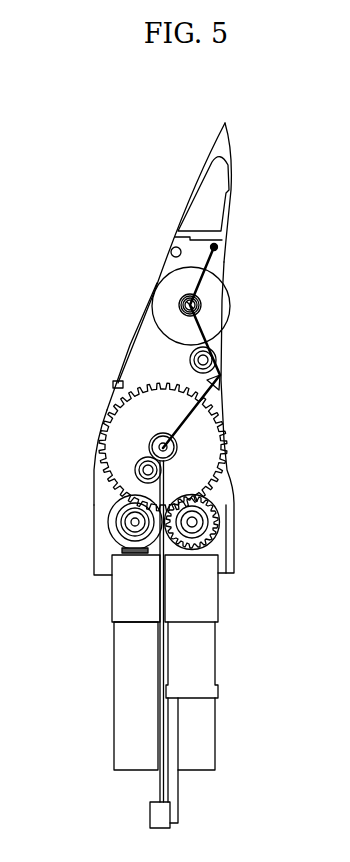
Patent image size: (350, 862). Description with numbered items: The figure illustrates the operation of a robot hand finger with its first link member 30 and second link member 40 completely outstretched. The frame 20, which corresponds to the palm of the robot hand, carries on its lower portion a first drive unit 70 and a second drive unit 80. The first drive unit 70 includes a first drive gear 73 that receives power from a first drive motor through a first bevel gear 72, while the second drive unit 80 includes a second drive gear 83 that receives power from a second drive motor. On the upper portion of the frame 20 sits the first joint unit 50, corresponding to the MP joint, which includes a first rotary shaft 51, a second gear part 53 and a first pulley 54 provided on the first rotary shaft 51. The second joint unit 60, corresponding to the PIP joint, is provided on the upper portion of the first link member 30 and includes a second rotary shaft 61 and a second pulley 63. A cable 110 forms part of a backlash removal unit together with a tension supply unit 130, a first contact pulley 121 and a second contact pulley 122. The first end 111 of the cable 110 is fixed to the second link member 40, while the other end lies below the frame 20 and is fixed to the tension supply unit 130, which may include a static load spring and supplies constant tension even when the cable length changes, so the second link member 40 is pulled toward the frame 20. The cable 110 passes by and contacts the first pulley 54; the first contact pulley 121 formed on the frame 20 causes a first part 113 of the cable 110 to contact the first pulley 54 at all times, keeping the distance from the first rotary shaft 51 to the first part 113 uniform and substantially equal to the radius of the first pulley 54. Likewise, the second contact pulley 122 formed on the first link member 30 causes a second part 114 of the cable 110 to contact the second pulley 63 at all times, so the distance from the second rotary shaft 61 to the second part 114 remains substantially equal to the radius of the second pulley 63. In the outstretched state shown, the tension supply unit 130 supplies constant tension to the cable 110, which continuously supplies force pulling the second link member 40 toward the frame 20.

The frame 20 is at (235, 545).
The first link member 30 is at (113, 385).
The second link member 40 is at (175, 237).
The first joint unit 50 is at (185, 442).
The first rotary shaft 51 is at (181, 466).
The second gear part 53 is at (140, 476).
The first pulley 54 is at (177, 434).
The second joint unit 60 is at (207, 302).
The second rotary shaft 61 is at (200, 312).
The second pulley 63 is at (188, 290).
The first drive unit 70 is at (108, 658).
The first bevel gear 72 is at (124, 551).
The first drive gear 73 is at (117, 523).
The second drive unit 80 is at (220, 658).
The second drive gear 83 is at (218, 514).
The cable 110 is at (210, 393).
The first end 111 is at (216, 246).
The first part 113 is at (180, 304).
The second part 114 is at (136, 464).
The first contact pulley 121 is at (106, 488).
The second contact pulley 122 is at (190, 360).
The tension supply unit 130 is at (152, 820).